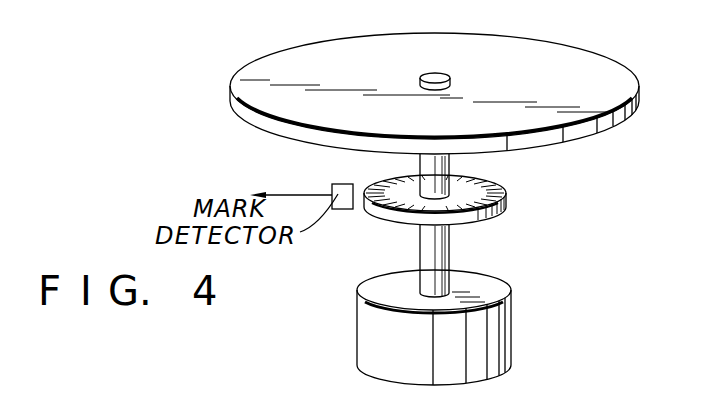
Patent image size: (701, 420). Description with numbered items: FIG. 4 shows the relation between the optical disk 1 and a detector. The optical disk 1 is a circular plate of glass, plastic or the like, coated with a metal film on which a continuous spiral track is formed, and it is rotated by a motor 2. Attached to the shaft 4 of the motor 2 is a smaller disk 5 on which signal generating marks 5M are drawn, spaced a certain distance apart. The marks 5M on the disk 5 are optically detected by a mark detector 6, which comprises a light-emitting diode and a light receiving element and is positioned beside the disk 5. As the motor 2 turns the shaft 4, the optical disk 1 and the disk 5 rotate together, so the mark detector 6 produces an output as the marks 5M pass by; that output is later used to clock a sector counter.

The optical disk 1 is at (585, 56).
The motor 2 is at (512, 320).
The shaft 4 is at (452, 250).
The disk 5 is at (503, 184).
The signal generating marks 5M is at (500, 213).
The mark detector 6 is at (343, 211).